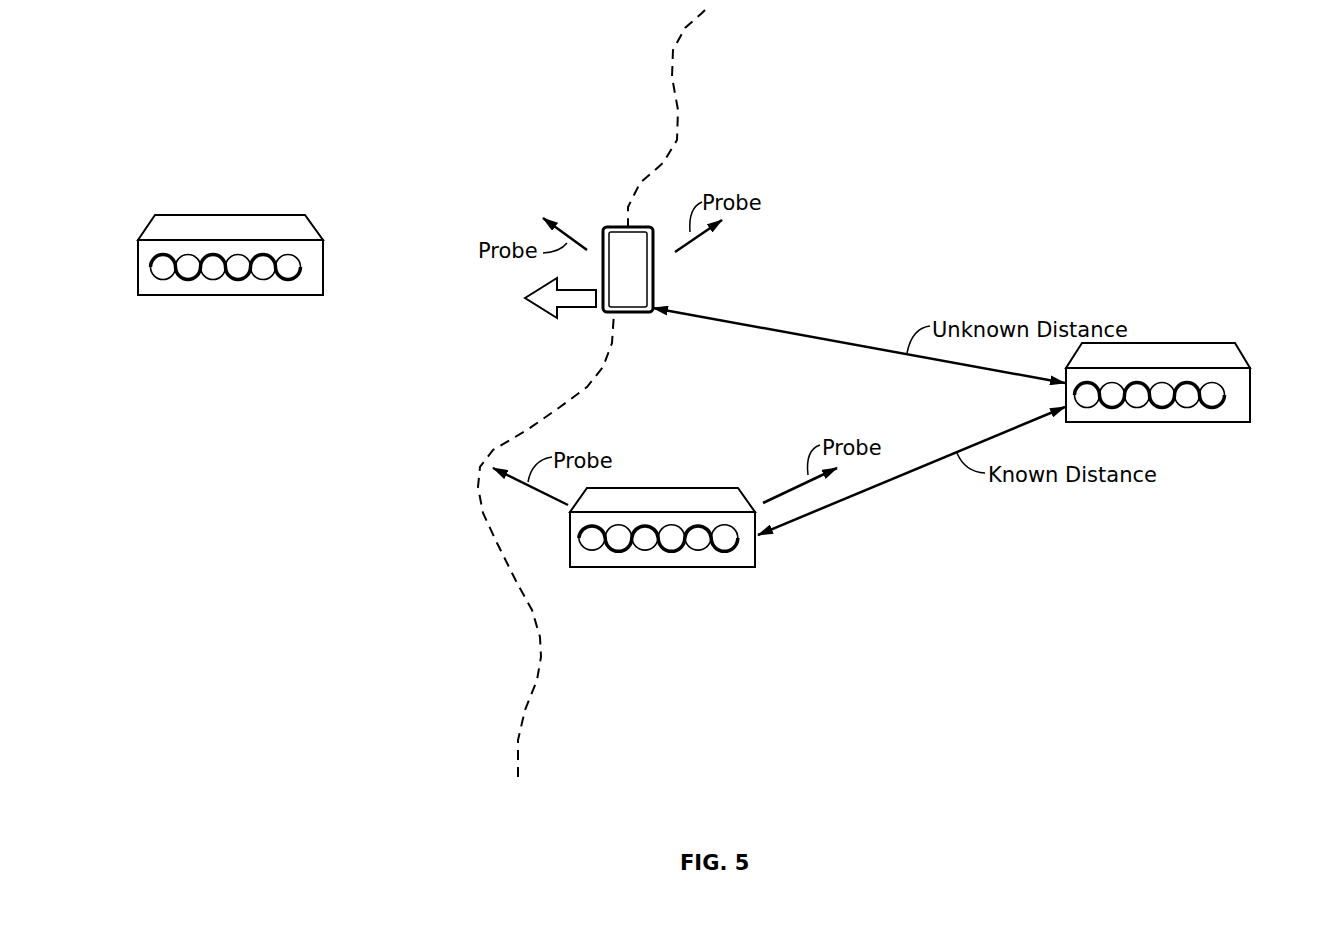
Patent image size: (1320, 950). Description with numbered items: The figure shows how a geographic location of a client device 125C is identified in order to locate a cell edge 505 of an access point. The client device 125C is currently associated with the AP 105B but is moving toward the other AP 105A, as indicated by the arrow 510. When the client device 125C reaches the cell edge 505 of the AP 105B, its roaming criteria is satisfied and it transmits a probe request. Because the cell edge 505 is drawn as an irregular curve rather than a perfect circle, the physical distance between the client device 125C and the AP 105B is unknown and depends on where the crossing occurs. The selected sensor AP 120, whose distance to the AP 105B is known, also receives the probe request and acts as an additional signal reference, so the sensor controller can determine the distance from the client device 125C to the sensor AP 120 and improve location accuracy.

The access point 105A is at (296, 215).
The access point 105B is at (1195, 342).
The client device 125C is at (655, 282).
The selected sensor AP 120 is at (695, 487).
The arrow 510 is at (527, 300).
The cell edge 505 is at (540, 660).